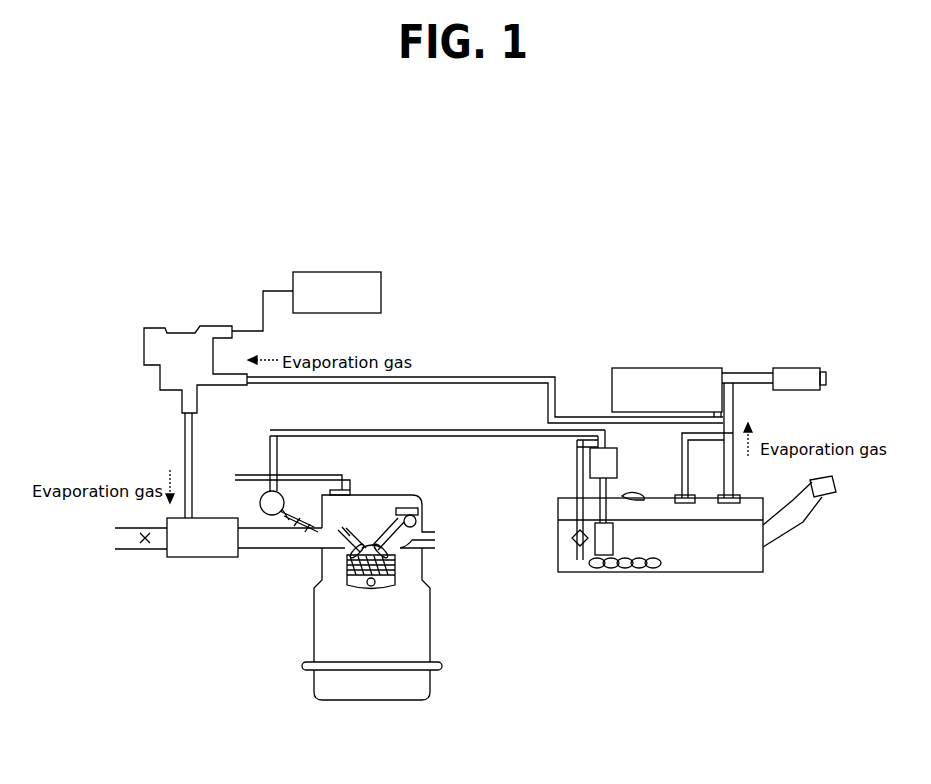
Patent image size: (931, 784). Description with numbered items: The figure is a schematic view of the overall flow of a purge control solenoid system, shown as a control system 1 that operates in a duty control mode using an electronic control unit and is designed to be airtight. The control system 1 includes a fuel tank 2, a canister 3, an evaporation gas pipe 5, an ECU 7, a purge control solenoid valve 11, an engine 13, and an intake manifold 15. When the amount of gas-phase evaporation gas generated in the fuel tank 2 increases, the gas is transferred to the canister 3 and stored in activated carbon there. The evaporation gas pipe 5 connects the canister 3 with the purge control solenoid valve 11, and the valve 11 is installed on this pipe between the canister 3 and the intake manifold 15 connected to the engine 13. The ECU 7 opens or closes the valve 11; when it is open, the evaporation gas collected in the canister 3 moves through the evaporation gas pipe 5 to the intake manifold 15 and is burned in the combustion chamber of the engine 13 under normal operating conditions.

The control system 1 is at (630, 240).
The fuel tank 2 is at (765, 561).
The canister 3 is at (681, 368).
The evaporation gas pipe 5 is at (441, 377).
The ECU 7 is at (357, 272).
The purge control solenoid valve 11 is at (152, 328).
The engine 13 is at (431, 634).
The intake manifold 15 is at (275, 553).